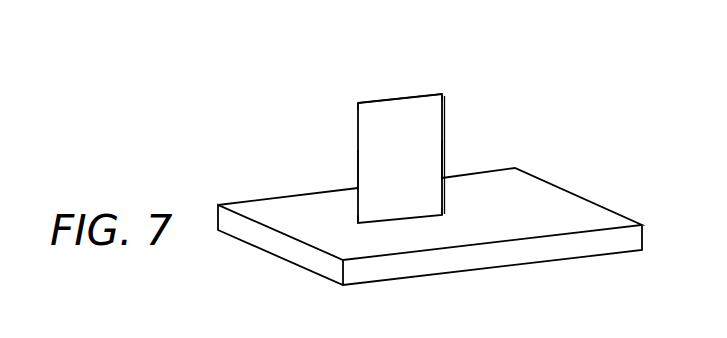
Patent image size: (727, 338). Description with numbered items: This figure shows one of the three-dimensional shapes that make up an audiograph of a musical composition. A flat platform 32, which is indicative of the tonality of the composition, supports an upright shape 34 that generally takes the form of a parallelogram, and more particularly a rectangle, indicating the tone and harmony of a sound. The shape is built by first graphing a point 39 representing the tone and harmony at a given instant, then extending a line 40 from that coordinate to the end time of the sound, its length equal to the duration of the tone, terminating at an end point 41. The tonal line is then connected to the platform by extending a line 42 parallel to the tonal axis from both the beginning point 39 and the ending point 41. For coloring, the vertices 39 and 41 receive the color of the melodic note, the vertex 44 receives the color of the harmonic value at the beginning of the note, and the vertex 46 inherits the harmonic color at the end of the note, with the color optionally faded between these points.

The platform 32 is at (296, 252).
The shape 34 is at (427, 132).
The point 39 is at (355, 100).
The line 40 is at (412, 97).
The end point 41 is at (446, 89).
The line 42 is at (358, 170).
The vertex 44 is at (356, 218).
The vertex 46 is at (449, 204).